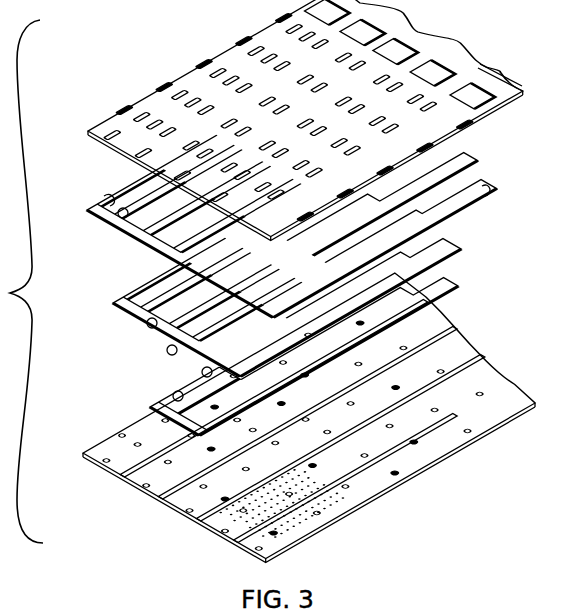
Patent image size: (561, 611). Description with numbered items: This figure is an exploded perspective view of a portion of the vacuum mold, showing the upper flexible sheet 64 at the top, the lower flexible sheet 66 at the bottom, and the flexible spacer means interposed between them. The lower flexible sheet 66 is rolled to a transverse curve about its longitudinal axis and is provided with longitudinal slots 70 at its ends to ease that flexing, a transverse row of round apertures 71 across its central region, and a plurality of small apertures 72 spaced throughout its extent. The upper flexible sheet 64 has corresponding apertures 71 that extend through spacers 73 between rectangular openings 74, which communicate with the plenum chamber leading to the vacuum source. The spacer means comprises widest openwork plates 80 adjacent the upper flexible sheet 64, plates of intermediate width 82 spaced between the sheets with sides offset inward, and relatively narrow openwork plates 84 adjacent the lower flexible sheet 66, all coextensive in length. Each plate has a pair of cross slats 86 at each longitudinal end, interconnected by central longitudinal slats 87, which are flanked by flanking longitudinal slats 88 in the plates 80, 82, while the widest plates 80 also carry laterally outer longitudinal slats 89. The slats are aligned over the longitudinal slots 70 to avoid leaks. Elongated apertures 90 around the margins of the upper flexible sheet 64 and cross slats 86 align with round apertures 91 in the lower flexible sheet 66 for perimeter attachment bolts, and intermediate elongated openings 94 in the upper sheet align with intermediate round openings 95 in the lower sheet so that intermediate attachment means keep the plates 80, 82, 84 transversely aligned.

The upper flexible sheet 64 is at (231, 102).
The lower flexible sheet 66 is at (365, 505).
The longitudinal slots 70 is at (222, 466).
The round apertures 71 is at (428, 62).
The small apertures 72 is at (290, 552).
The spacers 73 is at (468, 78).
The rectangular openings 74 is at (500, 73).
The rectangular flexible openwork plates 80 is at (90, 212).
The flexible plates of intermediate width 82 is at (113, 304).
The narrow flexible openwork plates 84 is at (160, 405).
The cross slats 86 is at (118, 232).
The central longitudinal slats 87 is at (150, 324).
The flanking longitudinal slats 88 is at (193, 186).
The laterally outer longitudinal slats 89 is at (105, 200).
The elongated apertures 90 is at (88, 131).
The round apertures 91 is at (181, 515).
The intermediate elongated openings 94 is at (284, 126).
The intermediate round openings 95 is at (238, 464).